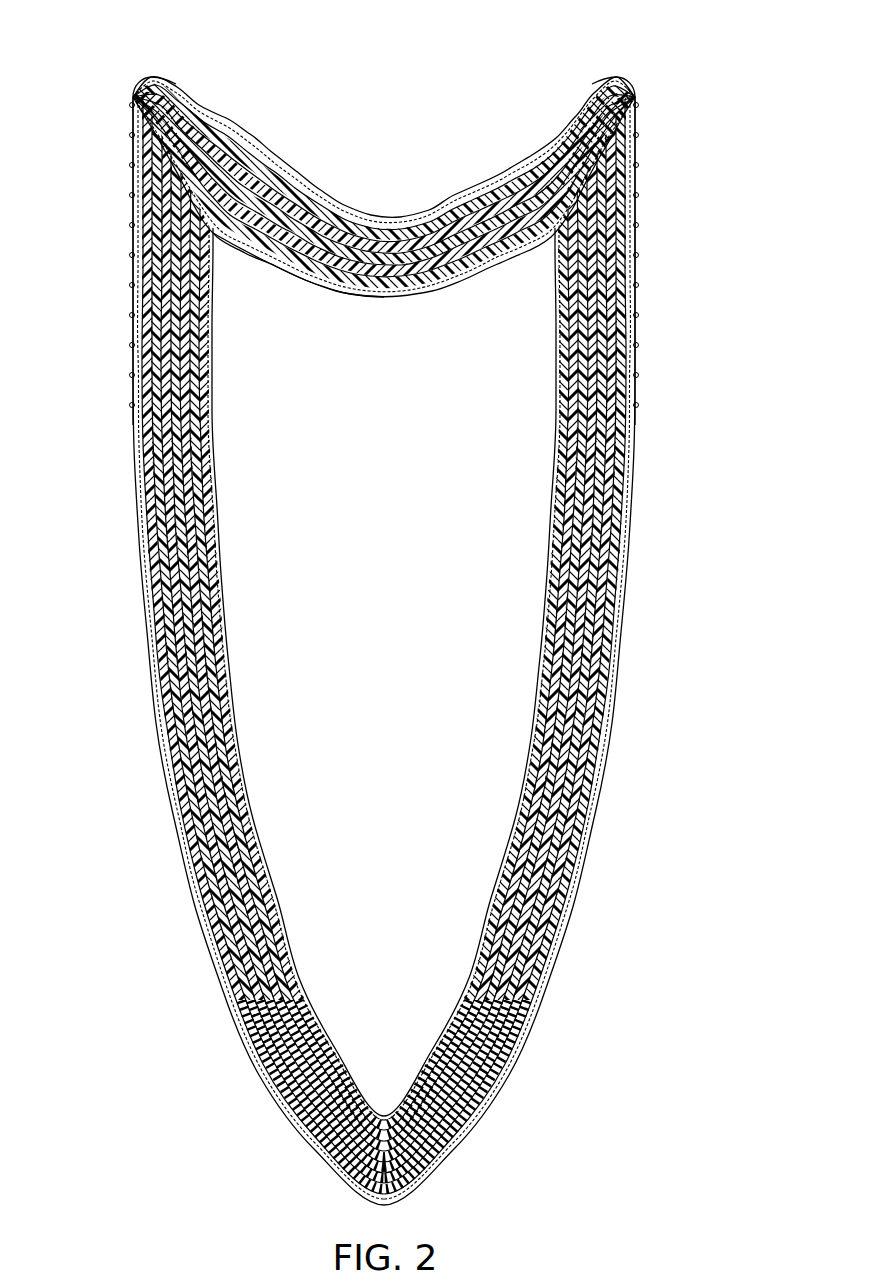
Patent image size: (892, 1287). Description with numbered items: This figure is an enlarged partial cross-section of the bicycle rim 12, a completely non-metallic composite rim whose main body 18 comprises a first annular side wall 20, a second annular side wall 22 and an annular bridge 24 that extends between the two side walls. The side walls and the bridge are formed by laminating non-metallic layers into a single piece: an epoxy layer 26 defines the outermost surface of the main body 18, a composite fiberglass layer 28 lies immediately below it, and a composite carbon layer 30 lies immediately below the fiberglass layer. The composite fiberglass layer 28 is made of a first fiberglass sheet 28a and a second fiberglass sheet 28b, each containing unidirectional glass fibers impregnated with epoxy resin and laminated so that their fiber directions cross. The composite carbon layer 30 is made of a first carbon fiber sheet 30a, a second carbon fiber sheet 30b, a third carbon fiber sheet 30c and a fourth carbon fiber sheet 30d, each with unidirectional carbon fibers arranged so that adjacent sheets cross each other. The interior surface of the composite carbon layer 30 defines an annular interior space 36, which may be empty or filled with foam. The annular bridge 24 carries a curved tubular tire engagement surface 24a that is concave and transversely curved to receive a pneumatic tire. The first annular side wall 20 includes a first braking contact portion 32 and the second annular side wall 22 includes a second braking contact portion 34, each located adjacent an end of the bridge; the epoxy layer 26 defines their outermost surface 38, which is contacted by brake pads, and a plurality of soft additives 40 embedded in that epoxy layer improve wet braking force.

The bicycle rim 12 is at (652, 36).
The main body 18 is at (700, 512).
The first annular side wall 20 is at (240, 690).
The second annular side wall 22 is at (642, 574).
The annular bridge 24 is at (388, 305).
The curved tubular tire engagement surface 24a is at (391, 219).
The epoxy layer 26 is at (176, 805).
The composite fiberglass layer 28 is at (104, 840).
The first fiberglass sheet 28a is at (192, 848).
The second fiberglass sheet 28b is at (208, 870).
The composite carbon layer 30 is at (104, 910).
The first carbon fiber sheet 30a is at (232, 915).
The second carbon fiber sheet 30b is at (252, 937).
The third carbon fiber sheet 30c is at (273, 963).
The fourth carbon fiber sheet 30d is at (297, 996).
The first braking contact portion 32 is at (92, 87).
The second braking contact portion 34 is at (676, 87).
The annular interior space 36 is at (370, 456).
The outermost surface 38 is at (132, 111).
The soft additives 40 is at (133, 380).